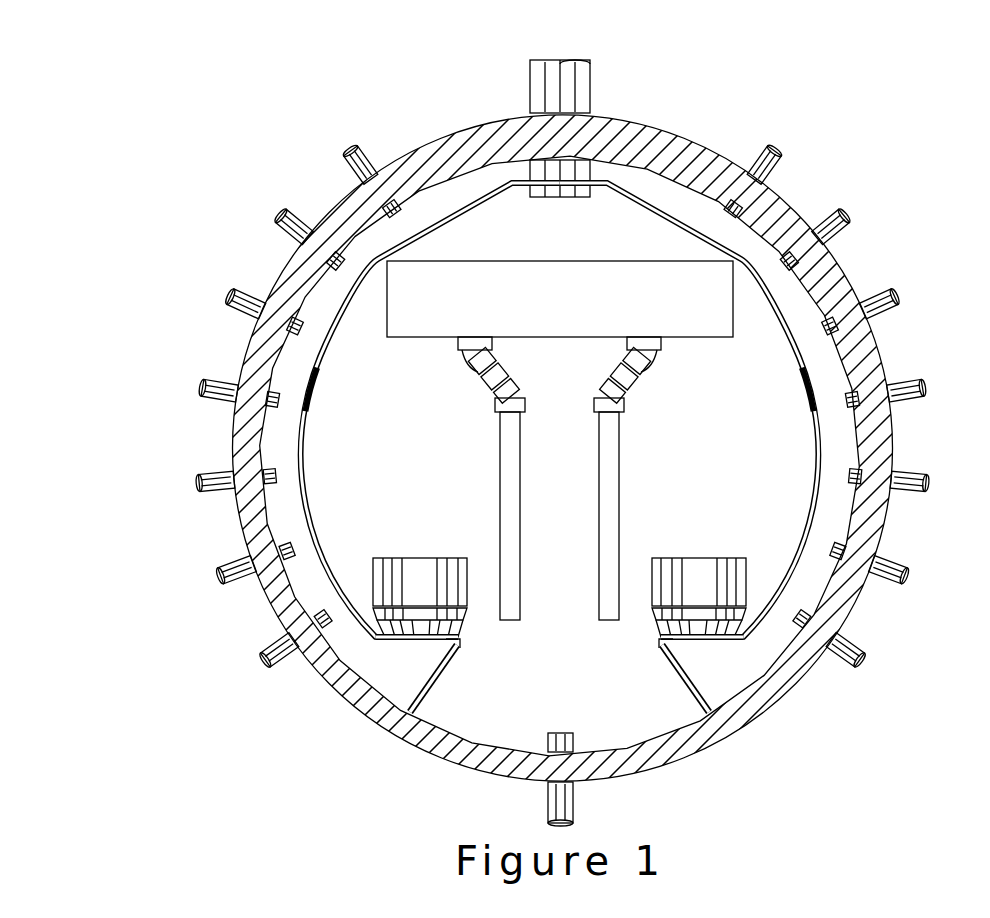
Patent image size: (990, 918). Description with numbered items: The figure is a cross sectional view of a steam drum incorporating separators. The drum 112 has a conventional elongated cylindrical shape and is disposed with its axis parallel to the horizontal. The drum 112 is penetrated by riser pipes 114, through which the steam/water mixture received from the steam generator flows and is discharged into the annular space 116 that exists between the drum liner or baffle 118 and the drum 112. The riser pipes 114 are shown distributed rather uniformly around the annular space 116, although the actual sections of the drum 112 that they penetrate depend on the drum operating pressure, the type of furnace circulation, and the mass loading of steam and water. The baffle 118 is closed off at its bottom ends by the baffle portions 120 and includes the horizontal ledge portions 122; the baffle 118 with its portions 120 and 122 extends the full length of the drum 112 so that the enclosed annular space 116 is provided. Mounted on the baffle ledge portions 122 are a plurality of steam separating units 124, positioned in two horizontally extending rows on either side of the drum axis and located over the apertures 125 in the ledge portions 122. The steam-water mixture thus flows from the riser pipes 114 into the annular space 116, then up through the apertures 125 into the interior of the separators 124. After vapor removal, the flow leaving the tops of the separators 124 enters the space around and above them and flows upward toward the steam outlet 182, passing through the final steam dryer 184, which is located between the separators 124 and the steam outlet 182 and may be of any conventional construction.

The drum 112 is at (870, 262).
The riser pipes 114 is at (352, 148).
The annular space 116 is at (288, 437).
The drum liner or baffle 118 is at (323, 360).
The baffle portions 120 is at (440, 668).
The horizontal ledge portions 122 is at (468, 630).
The steam separating units 124 is at (387, 558).
The apertures 125 is at (445, 643).
The steam outlet 182 is at (597, 95).
The final steam dryer 184 is at (523, 275).